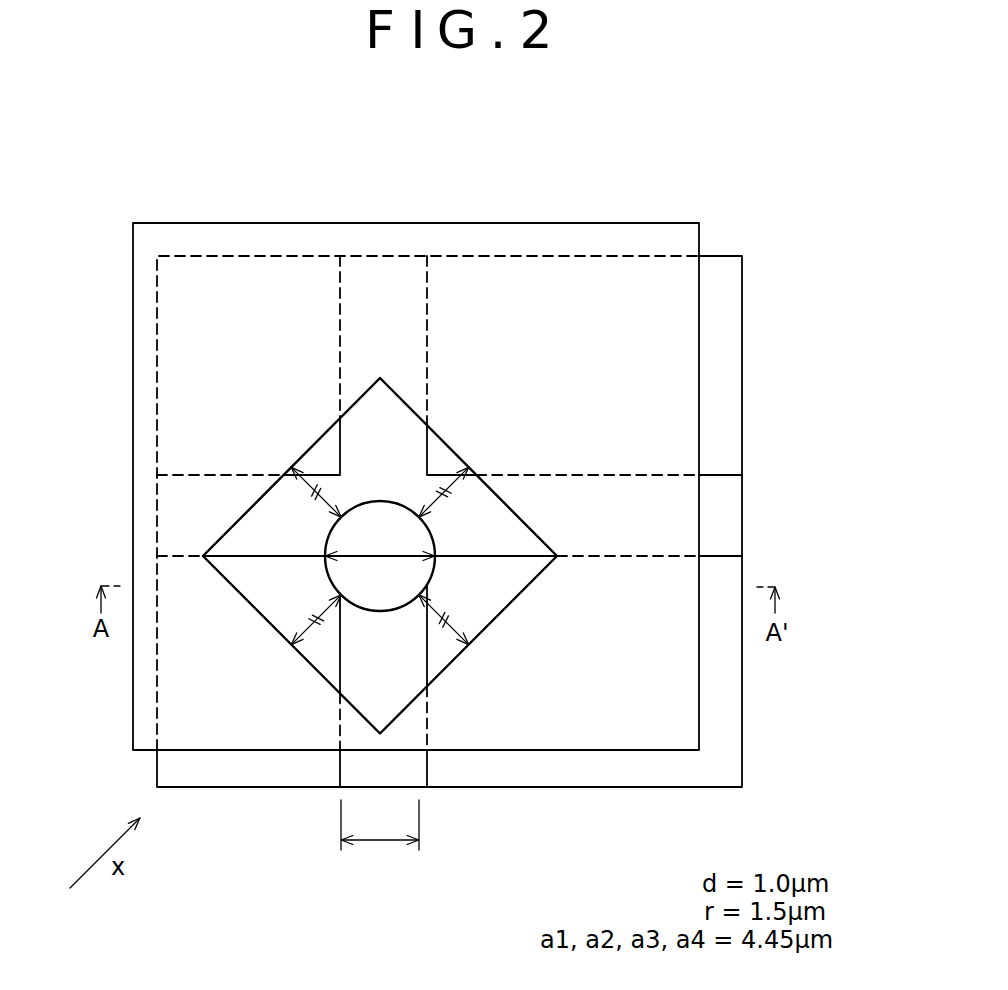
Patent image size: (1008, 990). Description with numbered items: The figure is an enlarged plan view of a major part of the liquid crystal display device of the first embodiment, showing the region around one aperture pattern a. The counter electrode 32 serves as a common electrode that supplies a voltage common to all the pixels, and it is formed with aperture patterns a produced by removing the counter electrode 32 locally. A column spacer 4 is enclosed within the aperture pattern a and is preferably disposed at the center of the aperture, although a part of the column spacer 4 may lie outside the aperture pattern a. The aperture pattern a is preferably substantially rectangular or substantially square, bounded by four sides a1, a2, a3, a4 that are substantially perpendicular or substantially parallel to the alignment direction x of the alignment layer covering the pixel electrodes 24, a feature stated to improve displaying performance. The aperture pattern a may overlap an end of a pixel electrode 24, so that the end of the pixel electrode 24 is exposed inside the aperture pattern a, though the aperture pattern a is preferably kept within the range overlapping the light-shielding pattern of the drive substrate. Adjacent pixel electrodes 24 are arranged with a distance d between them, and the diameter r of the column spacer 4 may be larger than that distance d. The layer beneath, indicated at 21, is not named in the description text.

The column spacer 4 is at (430, 533).
The semiconductor substrate 21 is at (742, 540).
The pixel electrode 24 is at (340, 313).
The counter electrode 32 is at (559, 223).
The aperture pattern a is at (413, 452).
The side a1 is at (307, 451).
The side a2 is at (522, 520).
The side a3 is at (497, 615).
The side a4 is at (260, 613).
The diameter r is at (380, 543).
The distance d is at (380, 837).